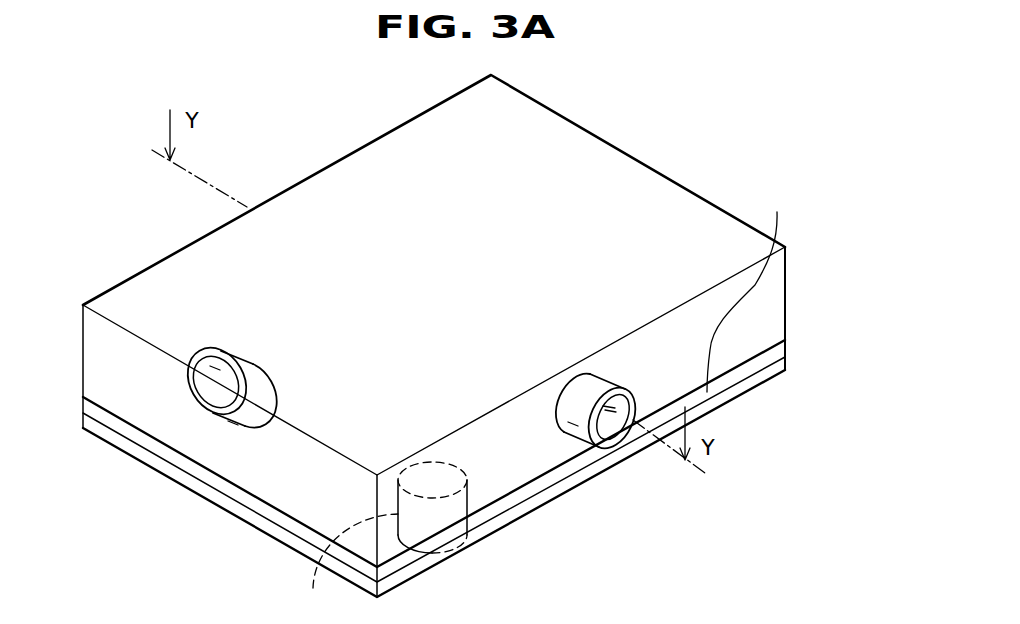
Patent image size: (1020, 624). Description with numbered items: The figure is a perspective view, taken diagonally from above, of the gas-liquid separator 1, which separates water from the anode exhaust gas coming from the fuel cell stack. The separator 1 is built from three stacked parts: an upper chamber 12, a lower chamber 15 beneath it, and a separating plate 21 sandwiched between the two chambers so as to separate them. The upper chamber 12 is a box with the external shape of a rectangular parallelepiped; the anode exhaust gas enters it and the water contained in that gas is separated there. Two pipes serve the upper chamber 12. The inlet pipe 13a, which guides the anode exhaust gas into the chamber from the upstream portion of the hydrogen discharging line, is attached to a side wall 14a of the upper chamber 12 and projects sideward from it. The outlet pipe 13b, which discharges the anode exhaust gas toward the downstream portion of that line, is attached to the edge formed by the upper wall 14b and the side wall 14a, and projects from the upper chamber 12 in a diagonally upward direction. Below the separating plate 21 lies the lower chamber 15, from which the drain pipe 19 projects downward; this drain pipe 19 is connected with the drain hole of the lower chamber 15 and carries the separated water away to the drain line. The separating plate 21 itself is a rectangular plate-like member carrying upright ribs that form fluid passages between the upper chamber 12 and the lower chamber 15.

The gas-liquid separator 1 is at (597, 107).
The upper chamber 12 is at (652, 188).
The inlet pipe 13a is at (581, 441).
The outlet pipe 13b is at (245, 362).
The side wall 14a is at (758, 316).
The upper wall 14b is at (385, 158).
The lower chamber 15 is at (495, 527).
The drain pipe 19 is at (313, 588).
The separating plate 21 is at (749, 285).